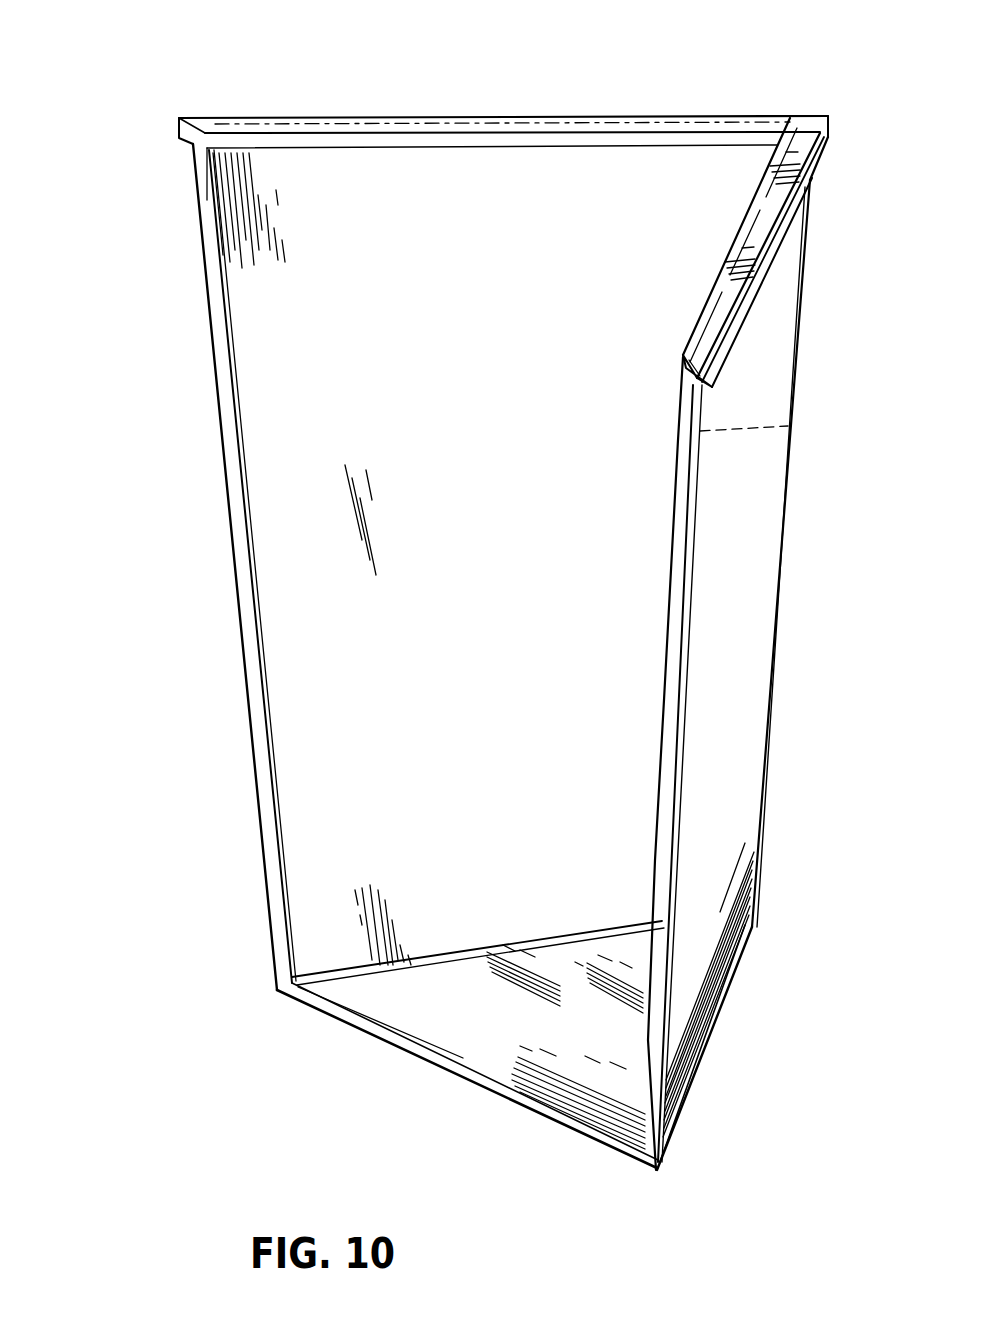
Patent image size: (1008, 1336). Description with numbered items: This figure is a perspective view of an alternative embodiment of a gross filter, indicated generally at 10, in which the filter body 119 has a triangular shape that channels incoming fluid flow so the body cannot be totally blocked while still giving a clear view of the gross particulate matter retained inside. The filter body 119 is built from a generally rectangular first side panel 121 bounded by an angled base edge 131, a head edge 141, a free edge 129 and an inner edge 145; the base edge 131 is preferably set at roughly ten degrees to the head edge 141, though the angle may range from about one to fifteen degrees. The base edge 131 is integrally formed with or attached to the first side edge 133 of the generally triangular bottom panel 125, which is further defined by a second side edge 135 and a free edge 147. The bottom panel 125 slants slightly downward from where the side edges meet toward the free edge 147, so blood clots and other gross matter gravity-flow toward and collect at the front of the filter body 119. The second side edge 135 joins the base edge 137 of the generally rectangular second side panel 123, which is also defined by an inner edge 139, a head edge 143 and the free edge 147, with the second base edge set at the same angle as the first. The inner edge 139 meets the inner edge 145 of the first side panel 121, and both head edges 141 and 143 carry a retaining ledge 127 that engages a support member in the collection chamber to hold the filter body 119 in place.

The housing 10 is at (112, 136).
The filter body 119 is at (206, 576).
The first side panel 121 is at (482, 533).
The second side panel 123 is at (757, 613).
The bottom panel 125 is at (497, 1027).
The retaining ledge 127 is at (262, 126).
The free edge 129 is at (256, 706).
The angled base edge 131 is at (427, 957).
The first side edge 133 is at (356, 976).
The second side edge 135 is at (718, 1021).
The base edge 137 is at (718, 956).
The inner edge 139 is at (781, 547).
The head edge 141 is at (329, 143).
The head edge 143 is at (757, 312).
The inner edge 145 is at (697, 436).
The free edge 147 is at (668, 801).